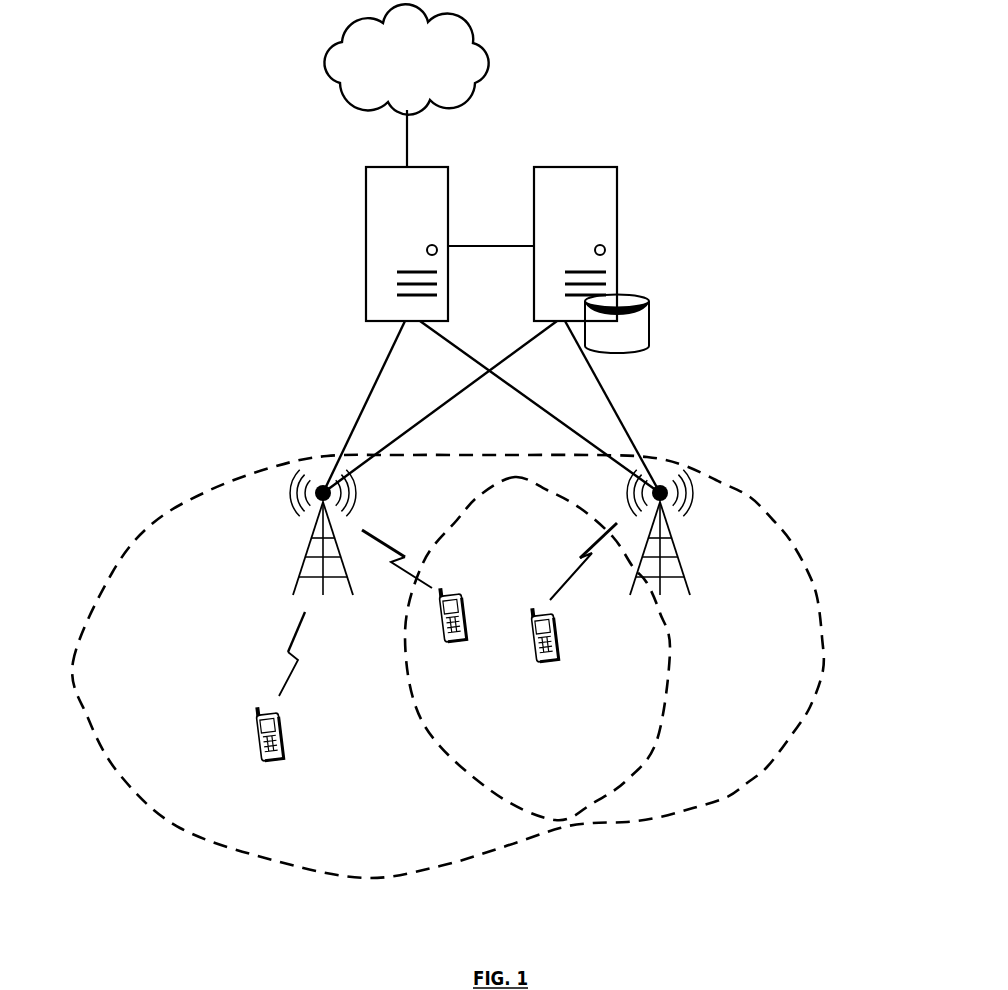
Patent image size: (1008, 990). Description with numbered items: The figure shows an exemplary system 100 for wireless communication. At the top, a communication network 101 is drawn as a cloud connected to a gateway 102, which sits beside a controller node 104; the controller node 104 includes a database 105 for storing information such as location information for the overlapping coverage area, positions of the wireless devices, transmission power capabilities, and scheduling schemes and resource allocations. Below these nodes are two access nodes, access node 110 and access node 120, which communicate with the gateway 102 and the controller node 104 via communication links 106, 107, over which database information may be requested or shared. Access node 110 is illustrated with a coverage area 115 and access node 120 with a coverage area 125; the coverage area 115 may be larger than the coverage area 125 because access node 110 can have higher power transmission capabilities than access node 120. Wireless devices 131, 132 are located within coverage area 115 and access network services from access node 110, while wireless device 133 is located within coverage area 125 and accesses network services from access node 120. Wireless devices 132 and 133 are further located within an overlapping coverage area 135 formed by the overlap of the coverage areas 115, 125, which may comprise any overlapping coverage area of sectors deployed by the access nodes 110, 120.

The system 100 is at (584, 76).
The communication network 101 is at (426, 70).
The gateway 102 is at (366, 207).
The controller node 104 is at (617, 226).
The database 105 is at (650, 327).
The communication link 106 is at (474, 352).
The communication link 107 is at (448, 402).
The access node 110 is at (308, 566).
The coverage area 115 is at (367, 876).
The access node 120 is at (677, 575).
The coverage area 125 is at (627, 825).
The wireless device 131 is at (270, 761).
The wireless device 132 is at (448, 638).
The wireless device 133 is at (550, 661).
The overlapping coverage area 135 is at (673, 678).